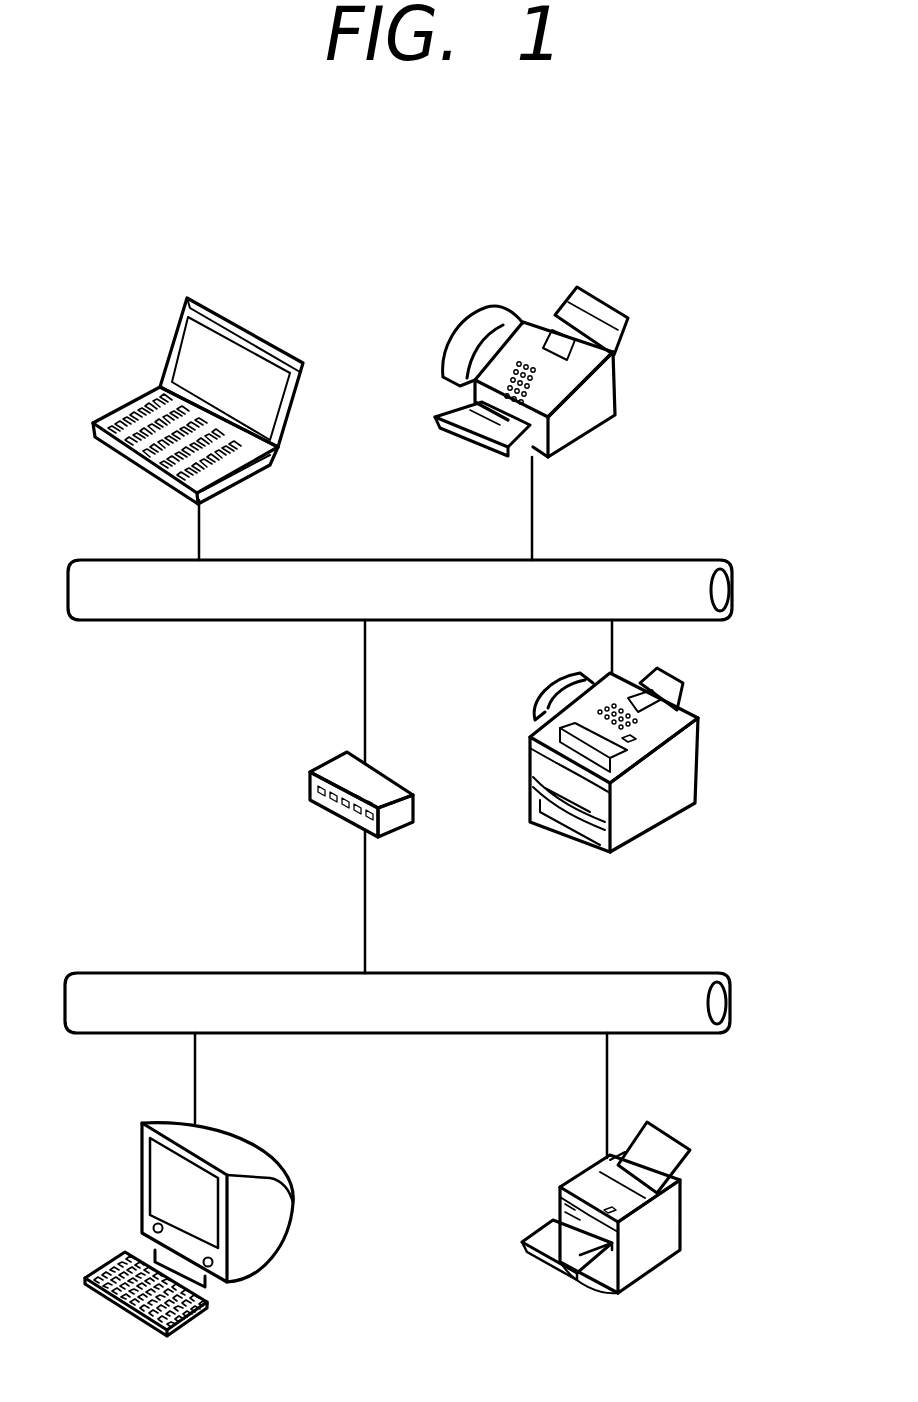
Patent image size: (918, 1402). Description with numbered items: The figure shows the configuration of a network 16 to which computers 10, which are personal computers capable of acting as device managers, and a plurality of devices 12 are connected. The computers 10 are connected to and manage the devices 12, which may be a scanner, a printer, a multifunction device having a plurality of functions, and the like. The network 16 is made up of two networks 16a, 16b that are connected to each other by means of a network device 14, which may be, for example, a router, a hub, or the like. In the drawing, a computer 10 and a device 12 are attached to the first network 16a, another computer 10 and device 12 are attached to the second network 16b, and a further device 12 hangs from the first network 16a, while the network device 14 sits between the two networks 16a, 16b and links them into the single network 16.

The computer 10 is at (293, 418).
The device 12 is at (620, 387).
The network device 14 is at (415, 802).
The network 16 is at (431, 241).
The network 16a is at (642, 561).
The network 16b is at (640, 971).